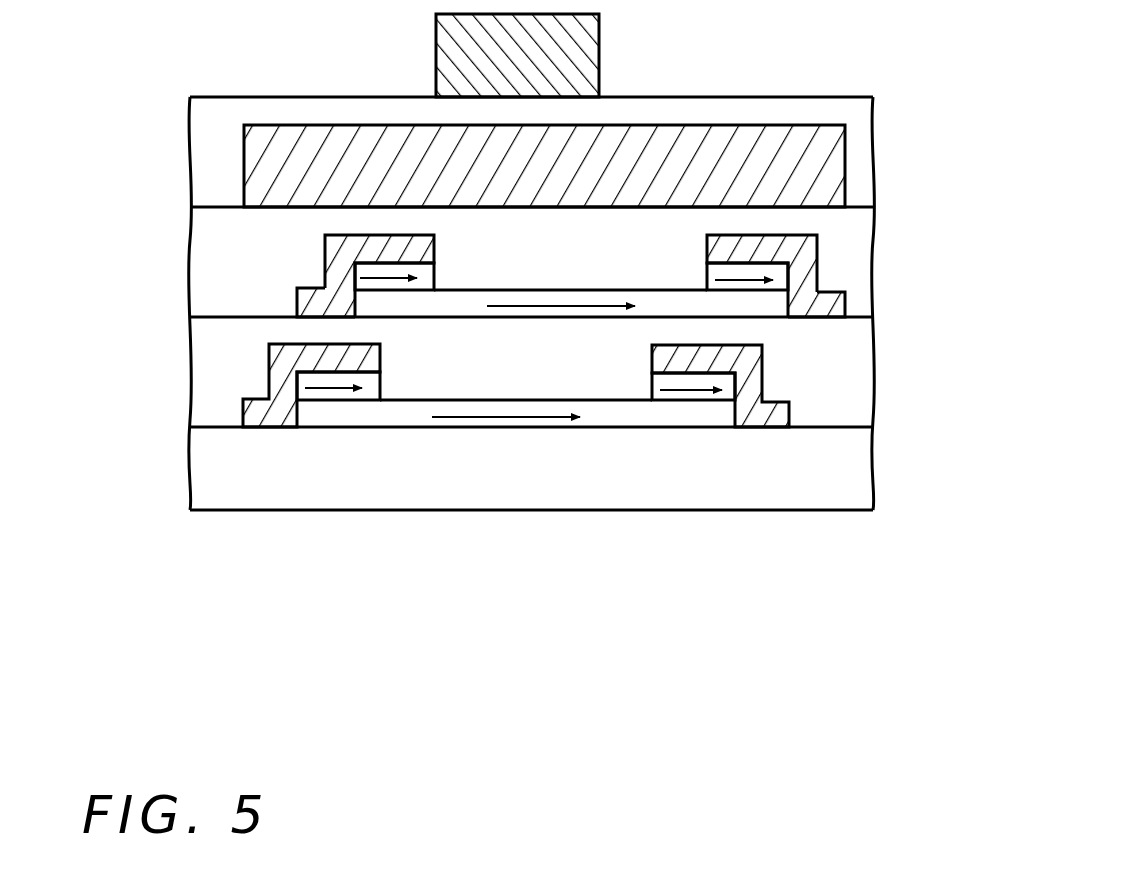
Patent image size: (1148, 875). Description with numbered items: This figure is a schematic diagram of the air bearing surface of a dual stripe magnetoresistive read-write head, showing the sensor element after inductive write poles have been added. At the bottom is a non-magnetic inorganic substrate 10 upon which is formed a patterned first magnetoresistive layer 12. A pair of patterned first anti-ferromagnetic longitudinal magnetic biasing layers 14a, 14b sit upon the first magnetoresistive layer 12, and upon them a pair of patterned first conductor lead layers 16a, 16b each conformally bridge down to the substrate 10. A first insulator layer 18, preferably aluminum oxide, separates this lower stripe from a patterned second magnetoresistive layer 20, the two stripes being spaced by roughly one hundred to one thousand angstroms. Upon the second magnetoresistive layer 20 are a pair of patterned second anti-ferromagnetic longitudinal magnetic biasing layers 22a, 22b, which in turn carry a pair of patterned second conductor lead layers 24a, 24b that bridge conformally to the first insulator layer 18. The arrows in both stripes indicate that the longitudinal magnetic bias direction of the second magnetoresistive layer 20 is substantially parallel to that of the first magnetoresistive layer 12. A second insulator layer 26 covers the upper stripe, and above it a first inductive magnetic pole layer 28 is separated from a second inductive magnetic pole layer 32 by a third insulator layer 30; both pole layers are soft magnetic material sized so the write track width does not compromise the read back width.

The substrate 10 is at (208, 472).
The patterned first magnetoresistive layer 12 is at (312, 415).
The patterned first anti-ferromagnetic longitudinal magnetic biasing layer 14a is at (370, 390).
The patterned first anti-ferromagnetic longitudinal magnetic biasing layer 14b is at (707, 397).
The patterned first conductor lead layer 16a is at (283, 352).
The patterned first conductor lead layer 16b is at (753, 350).
The first insulator layer 18 is at (203, 398).
The patterned second magnetoresistive layer 20 is at (652, 307).
The patterned second anti-ferromagnetic longitudinal magnetic biasing layer 22a is at (352, 264).
The patterned second anti-ferromagnetic longitudinal magnetic biasing layer 22b is at (770, 275).
The patterned second conductor lead layer 24a is at (323, 298).
The patterned second conductor lead layer 24b is at (838, 300).
The second insulator layer 26 is at (202, 222).
The first inductive magnetic pole layer 28 is at (287, 165).
The third insulator layer 30 is at (202, 122).
The second inductive magnetic pole layer 32 is at (558, 40).